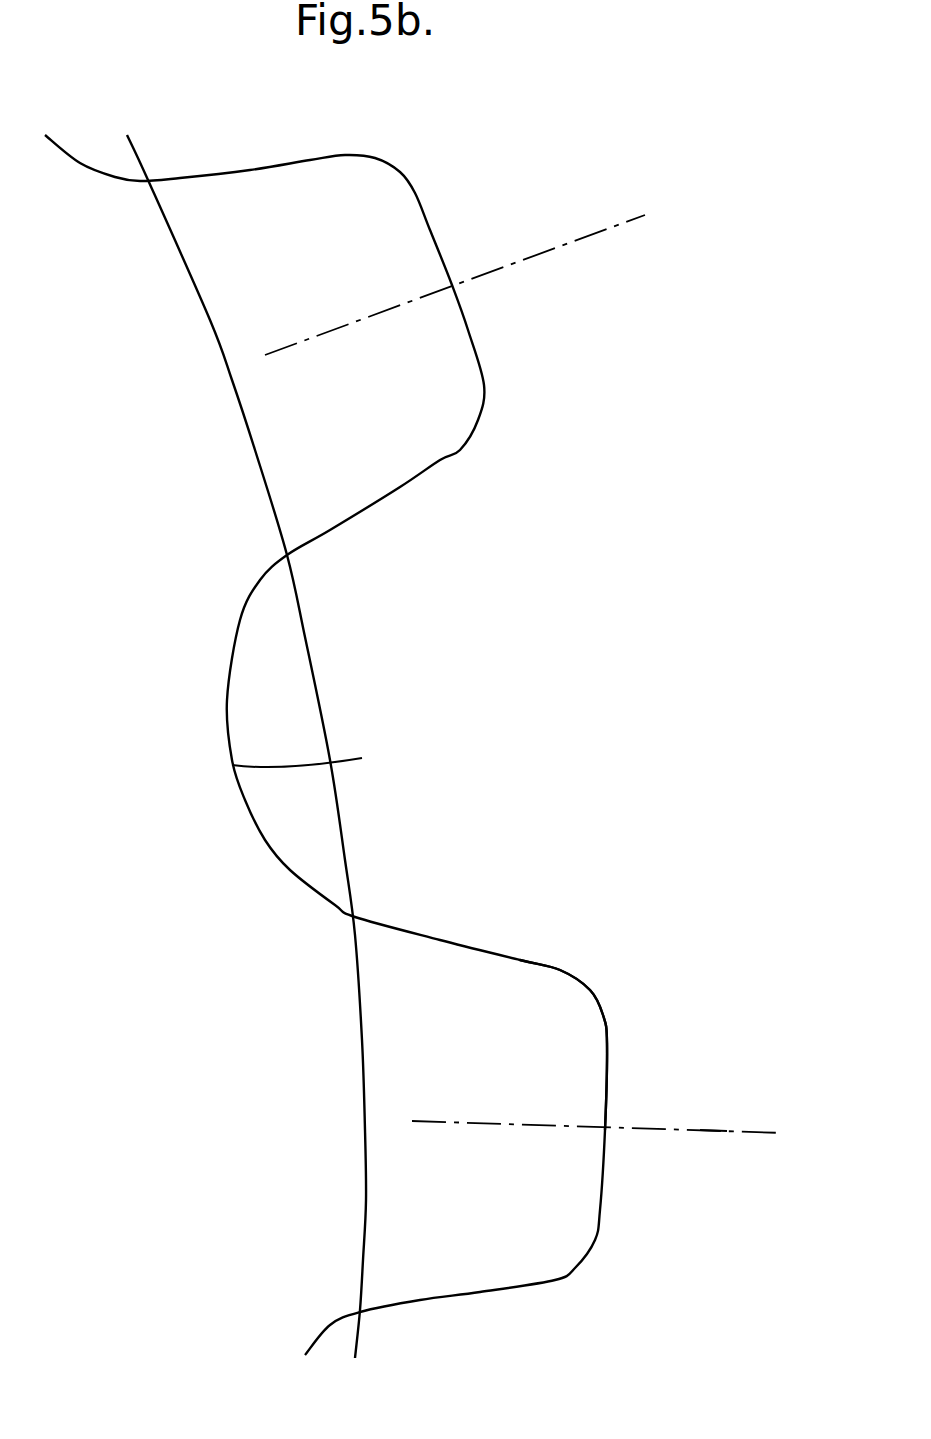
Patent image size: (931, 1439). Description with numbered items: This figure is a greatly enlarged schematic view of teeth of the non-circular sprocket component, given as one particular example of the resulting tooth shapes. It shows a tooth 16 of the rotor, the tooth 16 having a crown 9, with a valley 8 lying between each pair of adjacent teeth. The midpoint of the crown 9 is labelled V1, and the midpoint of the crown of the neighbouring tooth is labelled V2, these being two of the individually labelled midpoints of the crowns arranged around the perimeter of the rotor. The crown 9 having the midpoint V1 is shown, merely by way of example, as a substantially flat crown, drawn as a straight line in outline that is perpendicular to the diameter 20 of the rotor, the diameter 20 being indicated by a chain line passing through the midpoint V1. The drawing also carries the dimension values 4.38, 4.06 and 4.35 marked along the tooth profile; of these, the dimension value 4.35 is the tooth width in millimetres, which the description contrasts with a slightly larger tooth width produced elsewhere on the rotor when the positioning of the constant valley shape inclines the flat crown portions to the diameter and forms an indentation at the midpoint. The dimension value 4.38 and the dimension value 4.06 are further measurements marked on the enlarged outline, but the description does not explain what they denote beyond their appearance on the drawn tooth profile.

The upper flank section line 4.38 is at (256, 450).
The middle flank section line 4.06 is at (307, 637).
The lower flank section line 4.35 is at (363, 1203).
The valley 8 is at (307, 763).
The midpoint of crown V2 is at (452, 285).
The midpoint of crown V1 is at (605, 1130).
The diameter 20 is at (727, 1133).
The tooth 16 is at (565, 998).
The crown 9 is at (608, 1043).